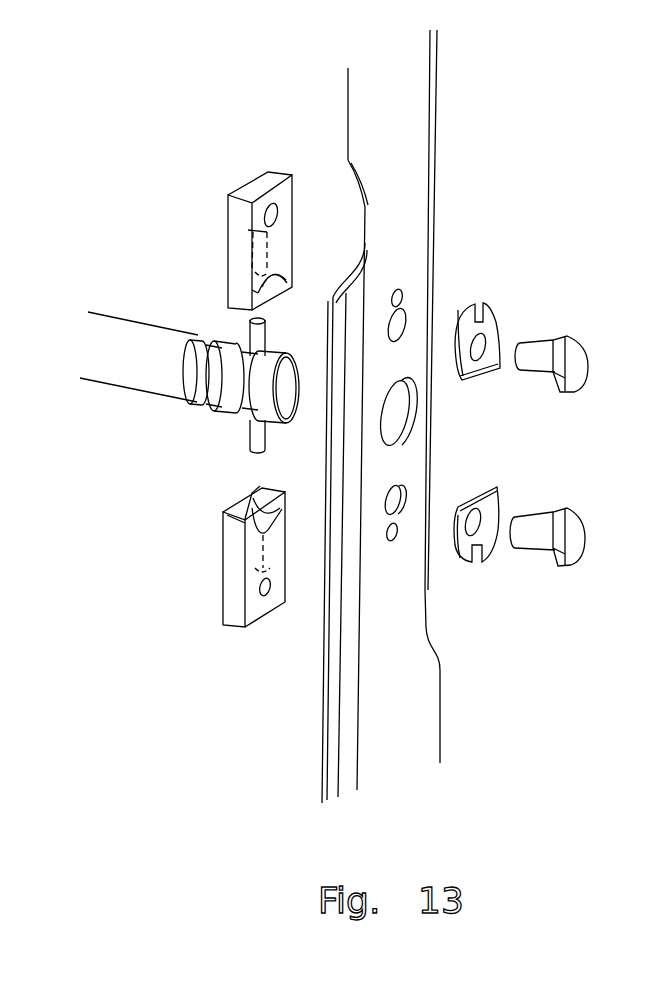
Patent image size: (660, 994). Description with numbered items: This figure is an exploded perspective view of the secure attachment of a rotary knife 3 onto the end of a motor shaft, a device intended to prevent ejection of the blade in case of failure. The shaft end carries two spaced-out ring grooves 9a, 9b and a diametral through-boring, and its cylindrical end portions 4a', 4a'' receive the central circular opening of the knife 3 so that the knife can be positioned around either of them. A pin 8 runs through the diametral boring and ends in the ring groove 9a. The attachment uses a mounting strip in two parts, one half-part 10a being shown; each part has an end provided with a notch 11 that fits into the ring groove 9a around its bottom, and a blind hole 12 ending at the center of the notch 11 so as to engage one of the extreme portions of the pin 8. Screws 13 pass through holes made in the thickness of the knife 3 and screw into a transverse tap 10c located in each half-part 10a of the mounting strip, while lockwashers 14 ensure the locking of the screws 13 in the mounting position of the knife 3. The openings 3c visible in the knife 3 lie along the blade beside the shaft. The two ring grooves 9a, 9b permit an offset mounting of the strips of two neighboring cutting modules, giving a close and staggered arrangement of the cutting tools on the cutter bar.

The knife 3 is at (313, 695).
The holes in guide rail 3c is at (412, 322).
The cylindrical end portion of the drive shaft 4a' is at (209, 323).
The cylindrical end portion of the drive shaft 4a'' is at (171, 338).
The pin 8 is at (243, 452).
The ring groove 9a is at (242, 397).
The ring groove 9b is at (198, 382).
The mounting strip part 10a is at (228, 247).
The transverse tap 10c is at (272, 212).
The notch 11 is at (275, 300).
The blind hole 12 is at (253, 230).
The screw 13 is at (557, 345).
The lockwasher 14 is at (502, 323).